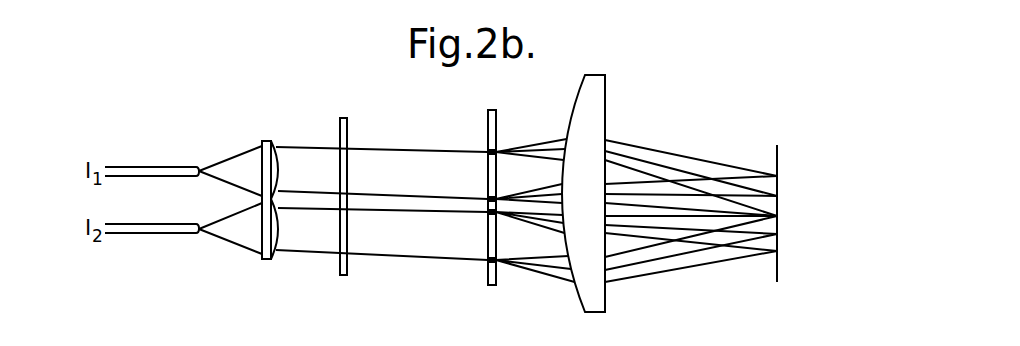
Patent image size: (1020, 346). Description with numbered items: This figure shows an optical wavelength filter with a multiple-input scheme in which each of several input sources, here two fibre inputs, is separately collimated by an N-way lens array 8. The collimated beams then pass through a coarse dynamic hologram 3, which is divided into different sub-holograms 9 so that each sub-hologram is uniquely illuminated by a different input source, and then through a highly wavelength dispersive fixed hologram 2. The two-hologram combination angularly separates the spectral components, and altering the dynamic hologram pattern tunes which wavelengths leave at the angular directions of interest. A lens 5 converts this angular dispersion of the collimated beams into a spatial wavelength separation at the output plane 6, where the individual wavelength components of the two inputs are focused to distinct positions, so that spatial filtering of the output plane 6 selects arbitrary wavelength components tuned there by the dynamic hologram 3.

The fixed hologram 2 is at (497, 119).
The dynamic hologram 3 is at (344, 118).
The lens 5 is at (606, 99).
The output plane 6 is at (778, 150).
The N-way lens array 8 is at (267, 141).
The sub-holograms 9 is at (349, 233).